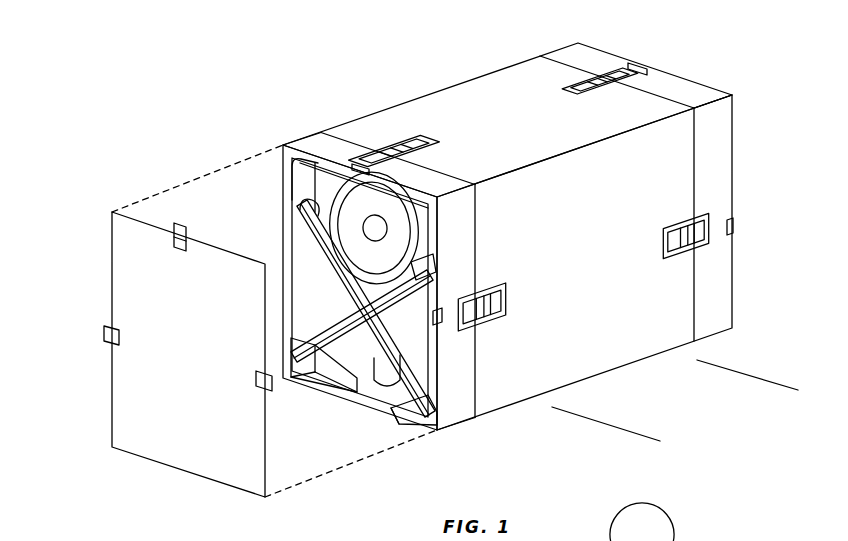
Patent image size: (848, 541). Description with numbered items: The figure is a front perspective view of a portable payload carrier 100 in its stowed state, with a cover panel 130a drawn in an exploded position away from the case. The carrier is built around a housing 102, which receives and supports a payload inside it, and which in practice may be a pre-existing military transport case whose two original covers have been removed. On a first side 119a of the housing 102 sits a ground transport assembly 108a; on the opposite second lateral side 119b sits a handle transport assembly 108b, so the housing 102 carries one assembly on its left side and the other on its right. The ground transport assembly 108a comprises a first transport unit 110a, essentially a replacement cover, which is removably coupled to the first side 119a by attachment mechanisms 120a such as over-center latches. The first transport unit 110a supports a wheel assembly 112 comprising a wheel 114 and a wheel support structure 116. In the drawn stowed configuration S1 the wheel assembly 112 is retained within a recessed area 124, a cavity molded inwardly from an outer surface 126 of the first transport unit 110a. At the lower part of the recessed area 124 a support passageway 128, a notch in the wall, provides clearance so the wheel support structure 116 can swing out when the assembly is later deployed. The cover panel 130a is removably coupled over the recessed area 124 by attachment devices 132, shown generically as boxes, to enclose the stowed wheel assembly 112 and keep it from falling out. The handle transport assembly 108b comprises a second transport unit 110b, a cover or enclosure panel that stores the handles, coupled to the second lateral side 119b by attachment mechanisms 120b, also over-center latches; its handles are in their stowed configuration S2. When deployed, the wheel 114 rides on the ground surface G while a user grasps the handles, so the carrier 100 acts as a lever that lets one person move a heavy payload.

The portable payload carrier 100 is at (155, 45).
The housing 102 is at (445, 100).
The ground transport assembly 108a is at (355, 266).
The handle transport assembly 108b is at (613, 175).
The first transport unit 110a is at (470, 403).
The second transport unit 110b is at (714, 306).
The wheel assembly 112 is at (322, 287).
The wheel 114 is at (393, 232).
The wheel support structure 116 is at (376, 386).
The first side 119a is at (104, 168).
The second lateral side 119b is at (774, 73).
The attachment mechanisms 120a is at (377, 148).
The attachment mechanisms 120b is at (602, 88).
The recessed area 124 is at (314, 393).
The outer surface 126 is at (428, 368).
The support passageway 128 is at (381, 424).
The cover panel 130a is at (120, 384).
The attachment devices 132 is at (178, 242).
The stowed configuration S1 is at (189, 139).
The stowed configuration S2 is at (666, 22).
The ground surface G is at (615, 428).